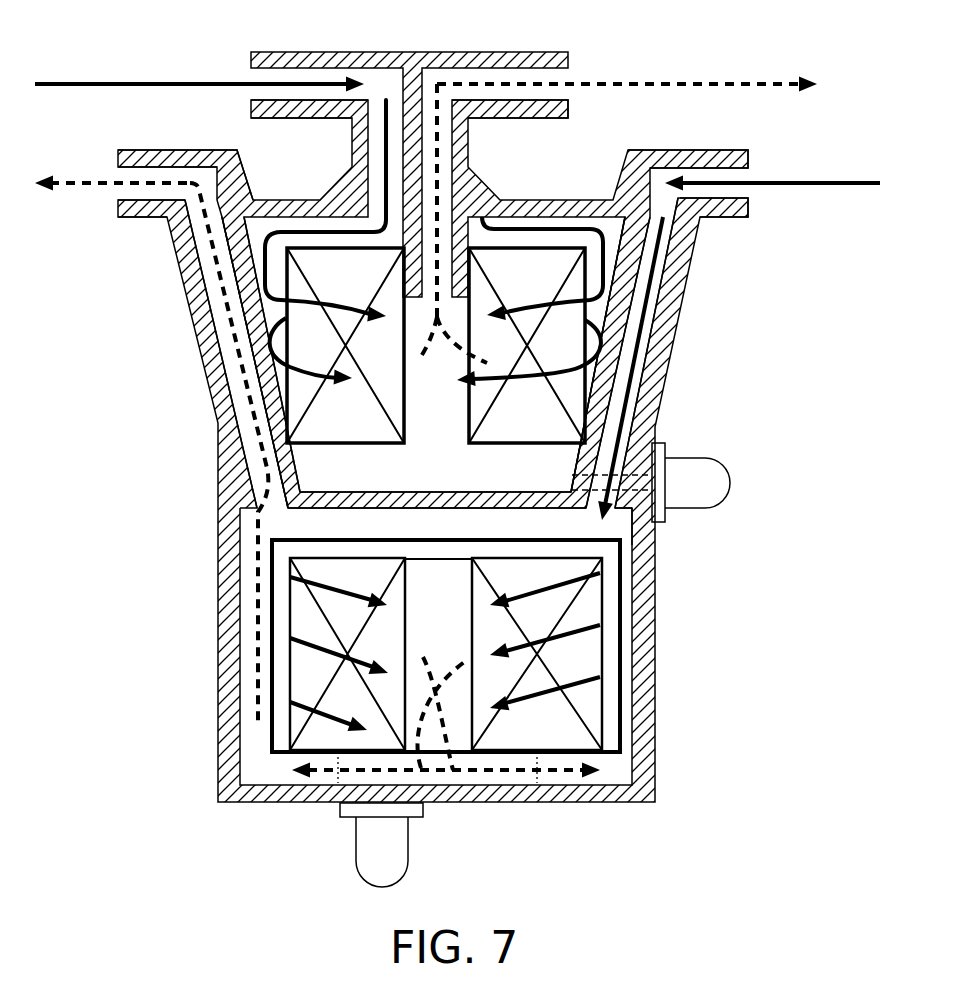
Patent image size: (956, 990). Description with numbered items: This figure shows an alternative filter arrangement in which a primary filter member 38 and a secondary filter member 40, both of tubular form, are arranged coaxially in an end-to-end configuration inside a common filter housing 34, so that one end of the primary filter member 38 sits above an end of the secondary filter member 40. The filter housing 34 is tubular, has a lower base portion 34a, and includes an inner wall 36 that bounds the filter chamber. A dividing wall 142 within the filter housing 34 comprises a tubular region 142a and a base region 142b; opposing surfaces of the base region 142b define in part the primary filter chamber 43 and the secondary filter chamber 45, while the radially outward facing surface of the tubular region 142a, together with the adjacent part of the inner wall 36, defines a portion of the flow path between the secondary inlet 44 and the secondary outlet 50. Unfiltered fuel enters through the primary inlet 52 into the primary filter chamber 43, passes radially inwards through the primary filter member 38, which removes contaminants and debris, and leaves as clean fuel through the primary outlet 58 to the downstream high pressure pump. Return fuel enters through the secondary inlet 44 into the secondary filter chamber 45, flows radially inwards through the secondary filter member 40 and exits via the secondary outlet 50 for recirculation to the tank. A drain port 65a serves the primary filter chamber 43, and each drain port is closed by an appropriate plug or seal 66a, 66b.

The filter housing 34 is at (680, 283).
The base portion 34a is at (613, 803).
The inner wall 36 is at (230, 381).
The primary filter member 38 is at (317, 428).
The secondary filter member 40 is at (587, 705).
The primary filter chamber 43 is at (317, 470).
The secondary inlet 44 is at (727, 172).
The secondary filter chamber 45 is at (295, 550).
The secondary outlet 50 is at (147, 216).
The primary inlet 52 is at (283, 78).
The primary outlet 58 is at (534, 78).
The drain port 65a is at (662, 515).
The plug or seal 66a is at (812, 498).
The plug or seal 66b is at (487, 874).
The dividing wall 142 is at (603, 378).
The tubular region 142a is at (240, 278).
The base region 142b is at (600, 543).